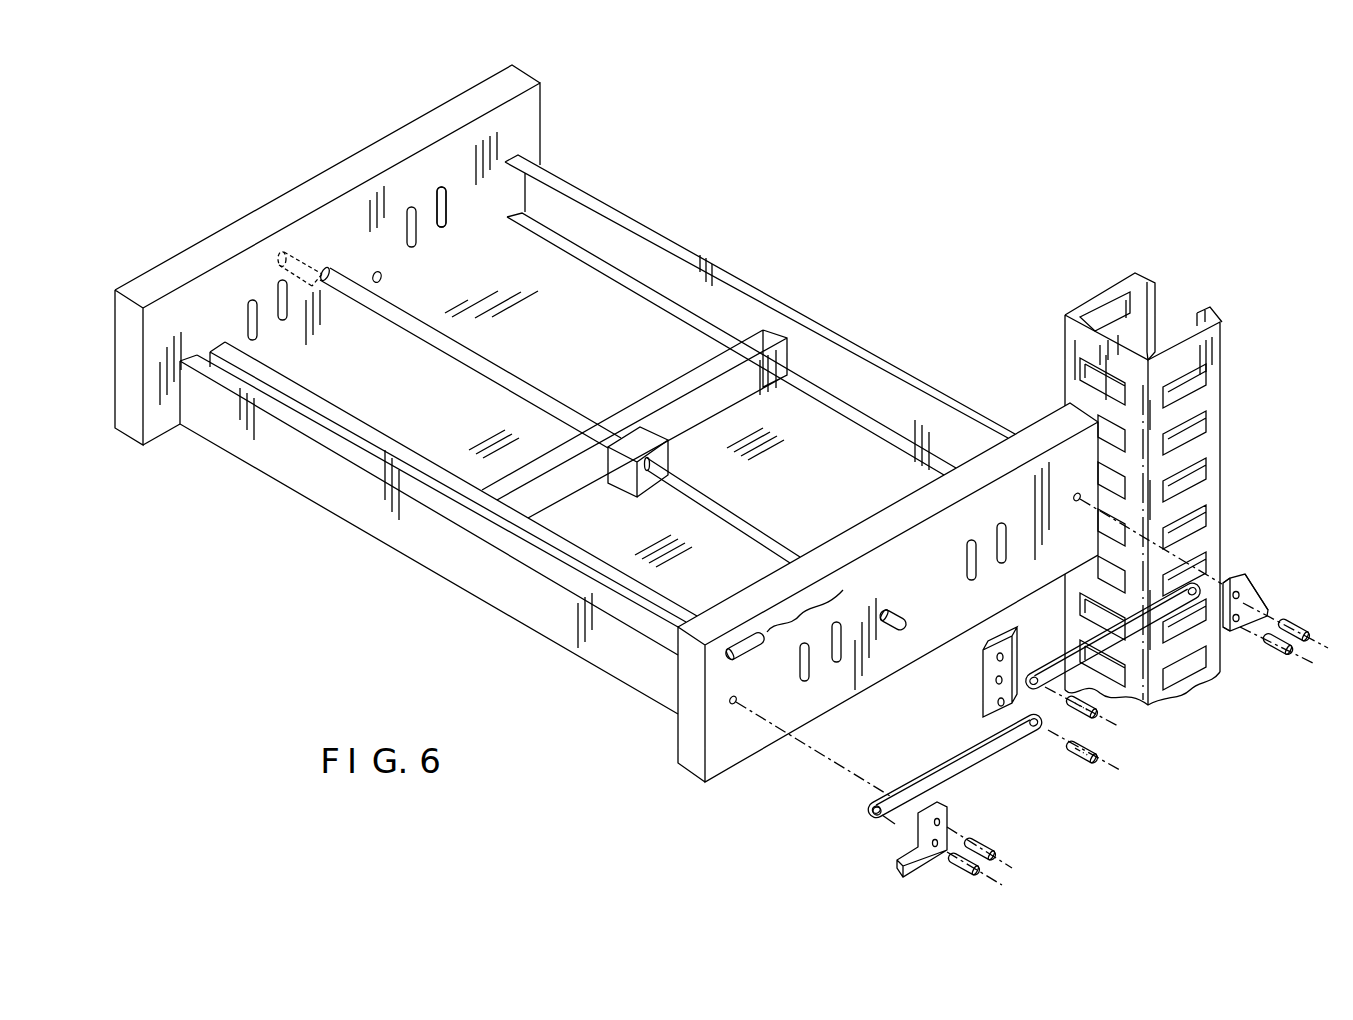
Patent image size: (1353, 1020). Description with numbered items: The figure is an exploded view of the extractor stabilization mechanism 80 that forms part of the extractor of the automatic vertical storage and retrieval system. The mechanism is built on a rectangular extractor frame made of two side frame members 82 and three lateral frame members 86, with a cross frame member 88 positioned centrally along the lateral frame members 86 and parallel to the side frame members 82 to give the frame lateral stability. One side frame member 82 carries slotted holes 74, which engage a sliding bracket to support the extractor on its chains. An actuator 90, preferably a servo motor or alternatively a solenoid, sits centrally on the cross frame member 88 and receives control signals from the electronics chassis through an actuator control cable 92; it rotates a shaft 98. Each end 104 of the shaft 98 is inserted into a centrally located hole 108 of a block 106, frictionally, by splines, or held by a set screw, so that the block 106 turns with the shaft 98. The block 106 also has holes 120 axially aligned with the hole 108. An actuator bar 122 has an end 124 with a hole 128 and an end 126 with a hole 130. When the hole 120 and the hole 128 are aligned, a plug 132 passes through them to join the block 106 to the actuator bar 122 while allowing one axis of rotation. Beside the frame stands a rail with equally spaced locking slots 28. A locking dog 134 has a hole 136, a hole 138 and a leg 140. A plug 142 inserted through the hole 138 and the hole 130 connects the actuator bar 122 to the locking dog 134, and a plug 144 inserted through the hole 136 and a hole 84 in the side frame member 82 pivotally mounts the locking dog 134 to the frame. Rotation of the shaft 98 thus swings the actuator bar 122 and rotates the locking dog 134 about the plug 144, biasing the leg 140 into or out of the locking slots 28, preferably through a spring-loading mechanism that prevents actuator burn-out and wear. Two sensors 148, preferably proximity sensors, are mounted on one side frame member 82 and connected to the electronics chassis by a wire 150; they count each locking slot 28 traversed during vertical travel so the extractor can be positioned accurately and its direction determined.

The locking slots 28 is at (1108, 310).
The slotted holes 74 is at (453, 196).
The extractor stabilization mechanism 80 is at (888, 208).
The side frame member 82 is at (168, 270).
The hole 84 is at (731, 702).
The lateral frame members 86 is at (600, 206).
The cross frame member 88 is at (770, 330).
The actuator 90 is at (650, 437).
The actuator control cable 92 is at (667, 432).
The shaft 98 is at (338, 270).
The ends 104 is at (893, 610).
The block 106 is at (983, 700).
The hole 108 is at (981, 688).
The holes 120 is at (1020, 662).
The actuator bar 122 is at (900, 845).
The end 124 is at (1033, 733).
The end 126 is at (868, 805).
The hole 128 is at (1050, 735).
The hole 130 is at (895, 828).
The plug 132 is at (1090, 765).
The locking dogs 134 is at (1252, 578).
The hole 136 is at (1226, 577).
The hole 138 is at (1236, 635).
The leg 140 is at (1265, 588).
The plug 142 is at (1277, 653).
The plug 144 is at (1298, 618).
The sensors 148 is at (727, 655).
The wire 150 is at (767, 625).